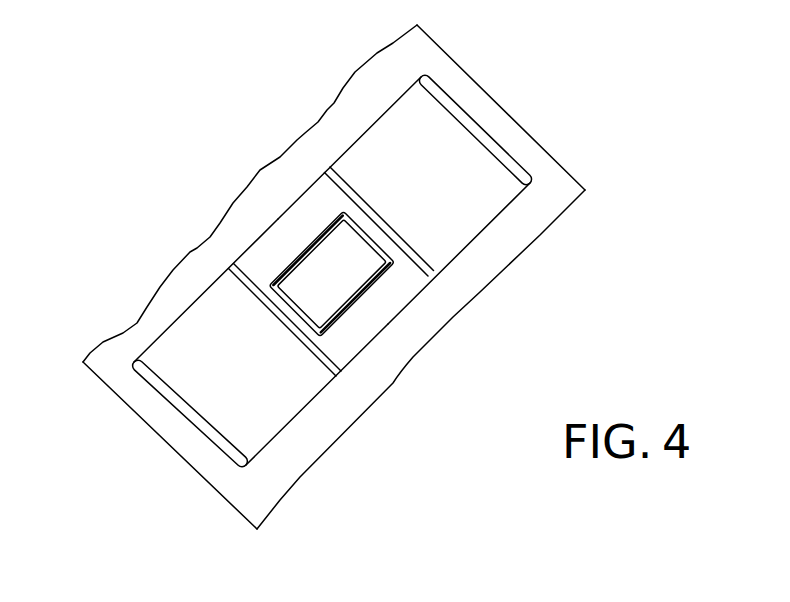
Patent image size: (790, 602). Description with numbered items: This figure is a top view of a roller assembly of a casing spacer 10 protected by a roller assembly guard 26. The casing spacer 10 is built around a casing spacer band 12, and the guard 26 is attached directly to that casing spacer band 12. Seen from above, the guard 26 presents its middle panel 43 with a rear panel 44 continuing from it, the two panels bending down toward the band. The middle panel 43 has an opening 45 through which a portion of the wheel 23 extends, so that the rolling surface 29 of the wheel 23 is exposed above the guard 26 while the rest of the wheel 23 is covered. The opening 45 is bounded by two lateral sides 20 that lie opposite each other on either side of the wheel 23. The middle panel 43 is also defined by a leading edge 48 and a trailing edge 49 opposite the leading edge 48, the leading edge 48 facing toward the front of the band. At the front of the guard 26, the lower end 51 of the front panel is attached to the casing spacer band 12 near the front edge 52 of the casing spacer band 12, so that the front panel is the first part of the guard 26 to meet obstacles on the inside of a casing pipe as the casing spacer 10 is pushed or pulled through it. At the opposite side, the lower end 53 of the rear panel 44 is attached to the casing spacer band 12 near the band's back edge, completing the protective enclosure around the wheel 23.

The casing spacer 10 is at (155, 144).
The casing spacer band 12 is at (382, 383).
The lateral sides 20 is at (353, 330).
The wheel 23 is at (300, 293).
The guard 26 is at (475, 185).
The rolling surface 29 is at (343, 288).
The middle panel 43 is at (380, 322).
The rear panel 44 is at (253, 383).
The opening 45 is at (394, 263).
The leading edge 48 is at (325, 170).
The trailing edge 49 is at (341, 372).
The lower end of front panel 51 is at (477, 130).
The front edge 52 is at (458, 54).
The lower end of rear panel 53 is at (203, 428).